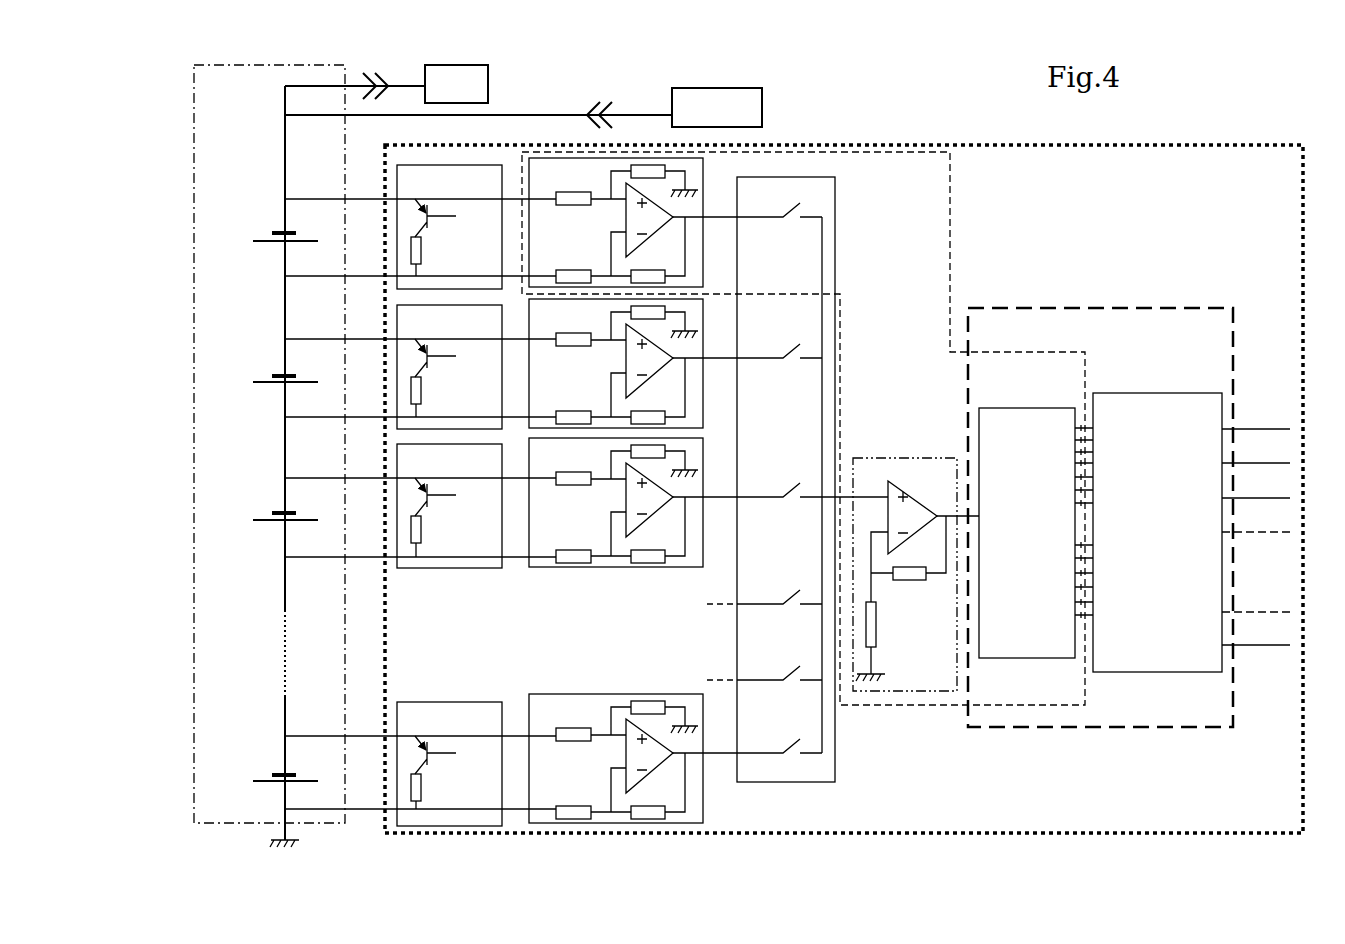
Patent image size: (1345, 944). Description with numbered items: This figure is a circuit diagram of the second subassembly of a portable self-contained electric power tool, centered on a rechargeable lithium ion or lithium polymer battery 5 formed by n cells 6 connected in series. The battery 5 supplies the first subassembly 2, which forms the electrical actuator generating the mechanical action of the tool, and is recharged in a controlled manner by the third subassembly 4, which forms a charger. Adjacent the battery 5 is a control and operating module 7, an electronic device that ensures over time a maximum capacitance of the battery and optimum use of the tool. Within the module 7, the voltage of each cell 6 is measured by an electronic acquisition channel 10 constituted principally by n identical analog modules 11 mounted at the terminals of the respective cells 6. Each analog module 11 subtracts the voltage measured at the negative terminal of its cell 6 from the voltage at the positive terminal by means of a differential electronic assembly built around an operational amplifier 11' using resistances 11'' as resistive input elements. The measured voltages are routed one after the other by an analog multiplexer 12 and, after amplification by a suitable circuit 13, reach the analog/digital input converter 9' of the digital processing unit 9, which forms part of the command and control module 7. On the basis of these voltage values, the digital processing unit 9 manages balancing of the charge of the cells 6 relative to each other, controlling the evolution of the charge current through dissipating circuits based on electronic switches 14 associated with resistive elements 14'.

The first subassembly 2 is at (498, 93).
The third subassembly 4 is at (770, 122).
The rechargeable electrochemical battery 5 is at (190, 124).
The cell 6 is at (262, 220).
The control and operating module 7 is at (1181, 136).
The digital processing unit 9 is at (1130, 498).
The analog/digital input converter 9' is at (1036, 513).
The electronic acquisition channel 10 is at (957, 185).
The analog module 11 is at (634, 490).
The operational amplifier 11' is at (649, 488).
The resistances 11'' is at (600, 492).
The analog multiplexer 12 is at (838, 214).
The amplification circuit 13 is at (902, 456).
The electronic switch 14 is at (449, 495).
The resistive element 14' is at (444, 522).